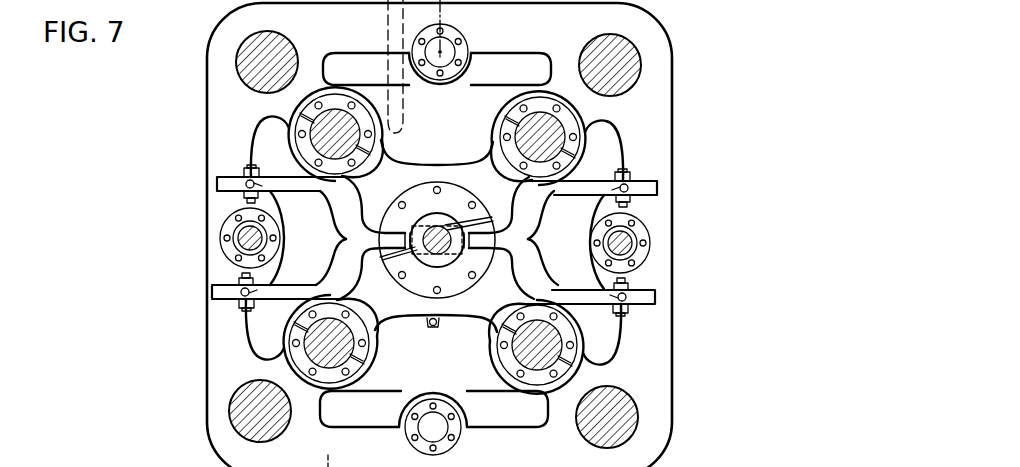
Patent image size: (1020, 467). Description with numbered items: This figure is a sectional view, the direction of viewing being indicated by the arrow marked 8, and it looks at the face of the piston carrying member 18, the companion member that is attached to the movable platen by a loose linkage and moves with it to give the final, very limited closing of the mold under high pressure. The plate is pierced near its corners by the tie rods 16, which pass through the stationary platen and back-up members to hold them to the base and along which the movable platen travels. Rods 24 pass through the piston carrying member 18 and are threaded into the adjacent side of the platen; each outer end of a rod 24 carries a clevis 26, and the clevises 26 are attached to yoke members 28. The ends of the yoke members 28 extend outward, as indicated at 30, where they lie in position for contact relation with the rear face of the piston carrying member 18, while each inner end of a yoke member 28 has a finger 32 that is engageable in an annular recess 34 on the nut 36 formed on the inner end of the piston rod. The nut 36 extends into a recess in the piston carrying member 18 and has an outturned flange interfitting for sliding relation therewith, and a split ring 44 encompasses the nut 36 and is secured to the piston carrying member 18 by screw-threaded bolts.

The section line 8 is at (462, 17).
The tie rods 16 is at (636, 48).
The piston carrying member 18 is at (660, 116).
The rods 24 is at (643, 294).
The clevis 26 is at (633, 303).
The yoke members 28 is at (372, 252).
The outwardly extending yoke ends 30 is at (647, 284).
The finger 32 is at (370, 237).
The annular recess 34 is at (450, 226).
The nut 36 is at (443, 256).
The split ring 44 is at (459, 283).